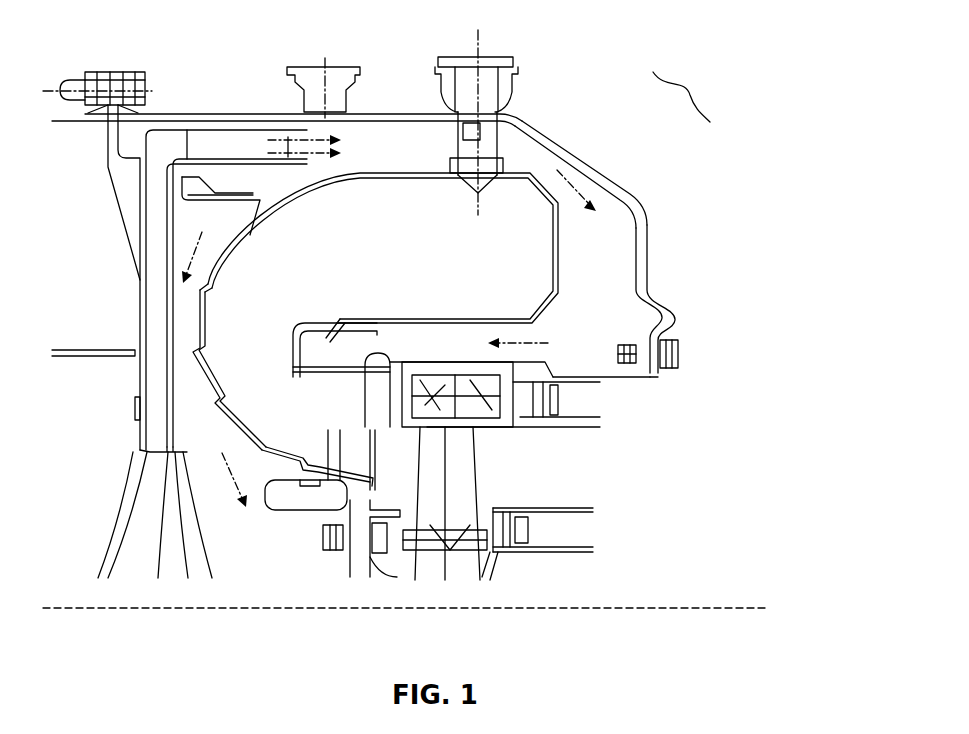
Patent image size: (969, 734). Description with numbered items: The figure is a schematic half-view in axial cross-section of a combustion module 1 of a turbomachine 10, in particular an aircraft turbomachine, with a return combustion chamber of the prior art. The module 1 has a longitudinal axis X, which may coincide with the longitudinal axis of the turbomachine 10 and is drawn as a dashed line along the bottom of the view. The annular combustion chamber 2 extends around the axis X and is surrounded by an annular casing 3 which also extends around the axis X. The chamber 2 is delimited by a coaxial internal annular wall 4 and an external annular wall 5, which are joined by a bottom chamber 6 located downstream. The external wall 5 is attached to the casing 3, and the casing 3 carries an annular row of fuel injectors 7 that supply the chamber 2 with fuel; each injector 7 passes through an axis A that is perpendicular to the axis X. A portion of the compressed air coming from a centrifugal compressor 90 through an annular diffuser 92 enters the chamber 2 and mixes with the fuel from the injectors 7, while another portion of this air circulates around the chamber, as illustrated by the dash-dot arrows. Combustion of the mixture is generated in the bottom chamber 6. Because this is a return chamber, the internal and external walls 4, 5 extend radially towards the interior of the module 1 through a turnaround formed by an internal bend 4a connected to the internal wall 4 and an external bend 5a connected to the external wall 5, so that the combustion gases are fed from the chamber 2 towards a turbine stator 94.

The turbomachine 10 is at (712, 87).
The combustion module 1 is at (623, 148).
The combustion chamber 2 is at (386, 271).
The annular casing 3 is at (634, 194).
The internal annular wall 4 is at (541, 290).
The internal bend 4a is at (300, 378).
The external annular wall 5 is at (390, 172).
The external bend 5a is at (200, 370).
The bottom chamber 6 is at (558, 146).
The fuel injector 7 is at (512, 99).
The centrifugal compressor 90 is at (188, 560).
The annular diffuser 92 is at (177, 134).
The turbine stator 94 is at (378, 455).
The injector axis A is at (483, 42).
The longitudinal axis X is at (712, 608).